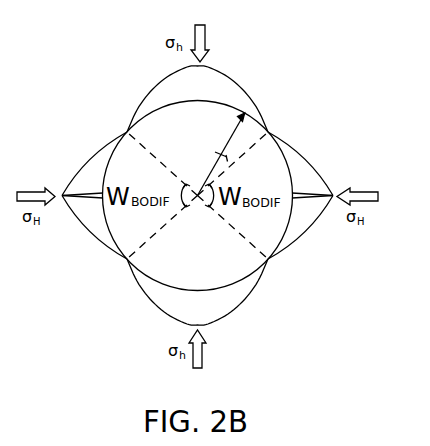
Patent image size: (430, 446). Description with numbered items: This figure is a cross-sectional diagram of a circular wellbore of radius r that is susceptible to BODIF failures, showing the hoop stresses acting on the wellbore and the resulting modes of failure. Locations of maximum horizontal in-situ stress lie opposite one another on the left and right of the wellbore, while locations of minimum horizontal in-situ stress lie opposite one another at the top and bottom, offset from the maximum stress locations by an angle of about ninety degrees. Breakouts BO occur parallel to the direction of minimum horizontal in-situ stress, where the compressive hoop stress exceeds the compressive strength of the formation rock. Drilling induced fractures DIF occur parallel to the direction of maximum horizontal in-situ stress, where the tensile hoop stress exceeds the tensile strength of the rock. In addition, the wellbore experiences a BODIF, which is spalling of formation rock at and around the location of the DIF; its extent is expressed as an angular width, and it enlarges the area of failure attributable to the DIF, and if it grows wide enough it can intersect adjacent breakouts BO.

The breakout BO is at (197, 195).
The drilling induced fracture DIF is at (65, 190).
The breakout-drilling induced fracture BODIF is at (98, 136).